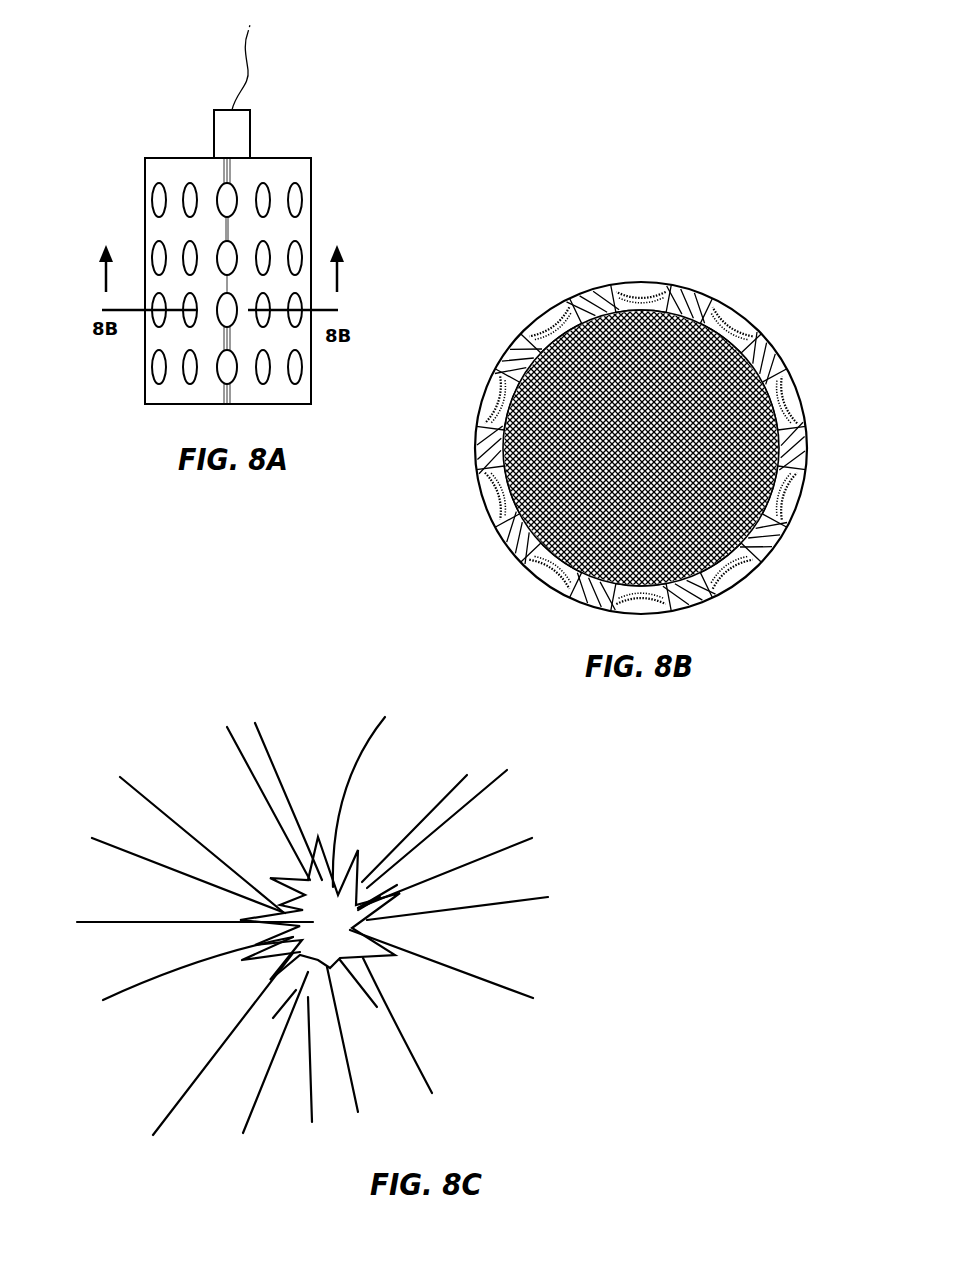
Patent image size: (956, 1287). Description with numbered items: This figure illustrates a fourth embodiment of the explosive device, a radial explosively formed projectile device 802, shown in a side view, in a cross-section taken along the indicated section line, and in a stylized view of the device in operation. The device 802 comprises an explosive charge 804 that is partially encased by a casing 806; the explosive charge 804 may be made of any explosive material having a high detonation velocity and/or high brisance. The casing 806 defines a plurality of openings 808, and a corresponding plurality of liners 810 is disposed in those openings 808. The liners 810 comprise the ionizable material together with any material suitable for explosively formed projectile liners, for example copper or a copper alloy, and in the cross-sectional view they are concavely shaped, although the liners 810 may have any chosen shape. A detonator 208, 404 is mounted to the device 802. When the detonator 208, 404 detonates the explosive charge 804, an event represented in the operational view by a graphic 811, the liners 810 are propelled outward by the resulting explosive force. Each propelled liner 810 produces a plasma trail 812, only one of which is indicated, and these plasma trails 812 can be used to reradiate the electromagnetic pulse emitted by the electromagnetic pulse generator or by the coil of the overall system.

In FIG. 8A, the radial explosively formed projectile device 802 is at (121, 175).
In FIG. 8B, the radial explosively formed projectile device 802 is at (546, 278).
In FIG. 8A, the detonator 208 is at (309, 91).
In FIG. 8A, the detonator 404 is at (237, 135).
In FIG. 8B, the explosive charge 804 is at (702, 288).
In FIG. 8B, the casing 806 is at (592, 298).
In FIG. 8B, the openings 808 is at (507, 357).
In FIG. 8A, the liners 810 is at (190, 363).
In FIG. 8B, the liners 810 is at (490, 487).
In FIG. 8C, the graphic 811 is at (393, 950).
In FIG. 8C, the plasma trail 812 is at (503, 788).